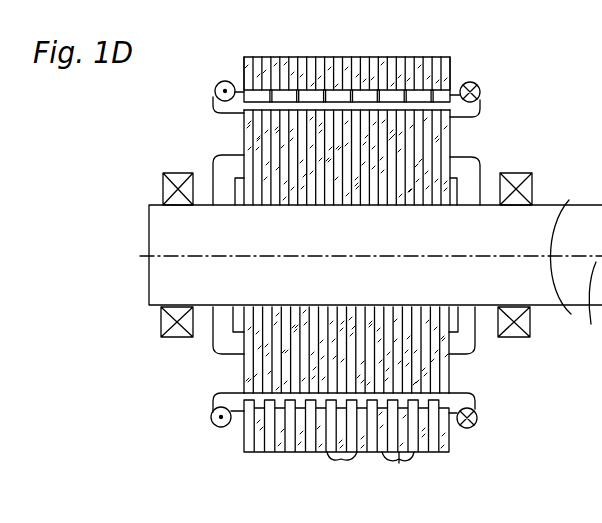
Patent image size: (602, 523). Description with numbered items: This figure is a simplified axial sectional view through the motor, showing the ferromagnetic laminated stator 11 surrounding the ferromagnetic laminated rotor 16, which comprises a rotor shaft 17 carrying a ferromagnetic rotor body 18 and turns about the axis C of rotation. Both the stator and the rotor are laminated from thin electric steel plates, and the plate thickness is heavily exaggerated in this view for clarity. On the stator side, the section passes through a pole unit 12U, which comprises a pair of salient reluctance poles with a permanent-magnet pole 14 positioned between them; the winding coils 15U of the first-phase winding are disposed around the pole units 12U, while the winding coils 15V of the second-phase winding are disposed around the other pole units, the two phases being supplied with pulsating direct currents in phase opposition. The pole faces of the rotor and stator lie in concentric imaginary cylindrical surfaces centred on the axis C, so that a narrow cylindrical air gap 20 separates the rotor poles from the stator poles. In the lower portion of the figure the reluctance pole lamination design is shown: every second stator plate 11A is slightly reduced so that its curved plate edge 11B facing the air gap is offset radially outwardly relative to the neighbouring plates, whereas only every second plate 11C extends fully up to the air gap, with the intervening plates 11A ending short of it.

The ferromagnetic laminated stator 11 is at (247, 67).
The stator plate 11A is at (402, 471).
The curved plate edge 11B is at (450, 412).
The stator plate 11C is at (337, 471).
The pole unit 12U is at (212, 113).
The permanent-magnet pole 14 is at (455, 82).
The winding coil 15U is at (481, 90).
The winding coil 15V is at (473, 168).
The ferromagnetic laminated rotor 16 is at (455, 377).
The rotor shaft 17 is at (586, 226).
The ferromagnetic rotor body 18 is at (450, 362).
The air gap 20 is at (242, 393).
The axis of rotation C is at (594, 307).